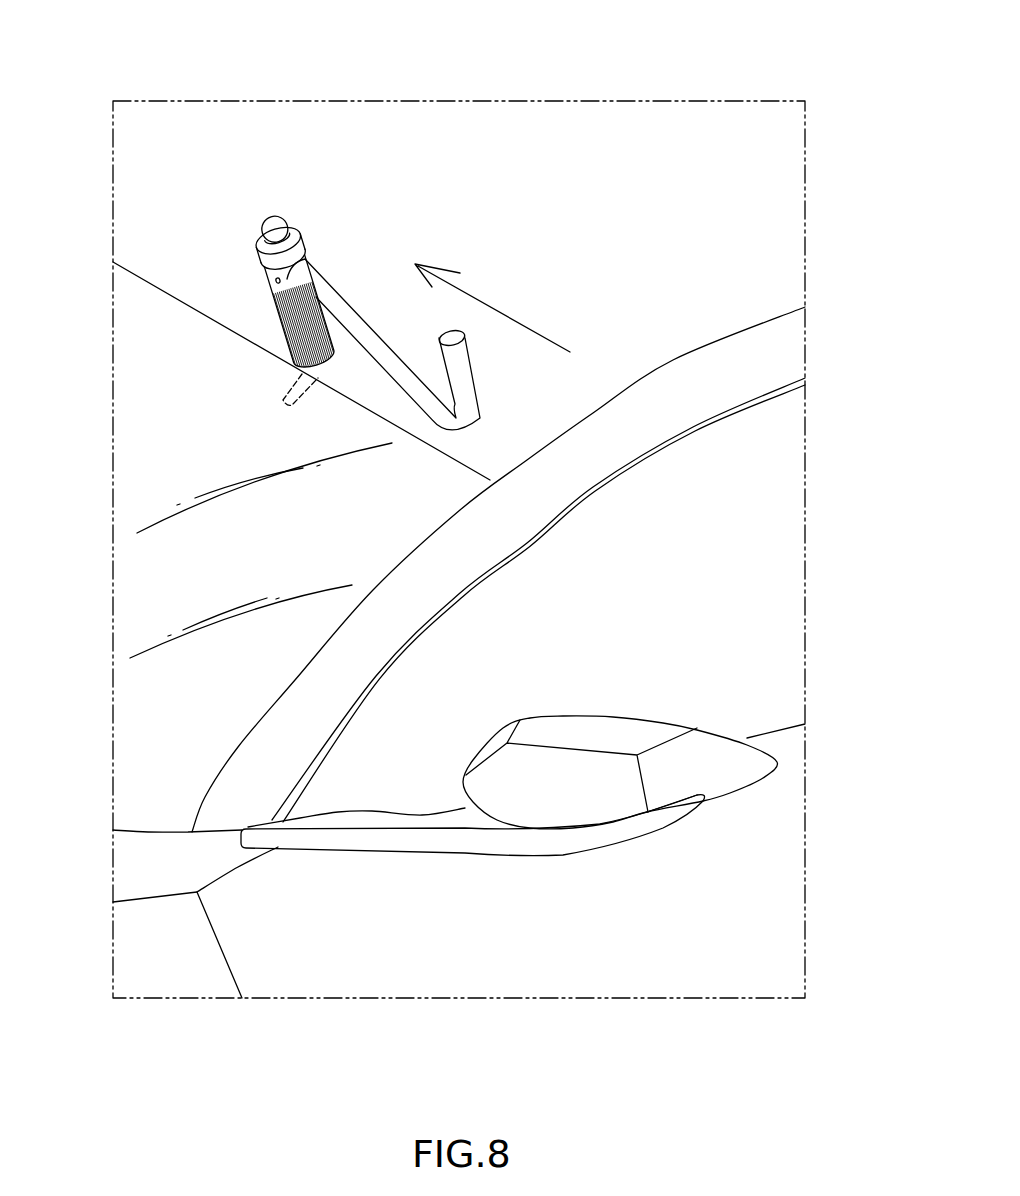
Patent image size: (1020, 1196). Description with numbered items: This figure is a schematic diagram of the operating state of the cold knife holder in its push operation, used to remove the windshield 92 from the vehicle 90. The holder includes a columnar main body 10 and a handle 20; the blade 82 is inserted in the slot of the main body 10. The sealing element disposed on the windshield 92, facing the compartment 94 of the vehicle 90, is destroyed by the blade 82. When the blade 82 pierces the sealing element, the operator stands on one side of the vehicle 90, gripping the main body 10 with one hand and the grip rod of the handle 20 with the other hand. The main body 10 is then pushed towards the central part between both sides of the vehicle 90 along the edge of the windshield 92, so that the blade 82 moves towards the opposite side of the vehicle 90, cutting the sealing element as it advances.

The main body 10 is at (264, 295).
The handle 20 is at (354, 280).
The blade 82 is at (287, 383).
The vehicle 90 is at (608, 126).
The windshield 92 is at (177, 383).
The compartment 94 is at (732, 575).